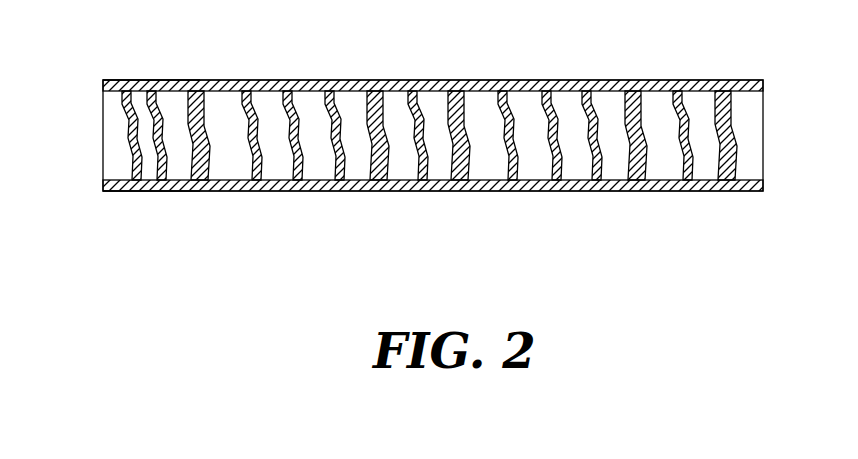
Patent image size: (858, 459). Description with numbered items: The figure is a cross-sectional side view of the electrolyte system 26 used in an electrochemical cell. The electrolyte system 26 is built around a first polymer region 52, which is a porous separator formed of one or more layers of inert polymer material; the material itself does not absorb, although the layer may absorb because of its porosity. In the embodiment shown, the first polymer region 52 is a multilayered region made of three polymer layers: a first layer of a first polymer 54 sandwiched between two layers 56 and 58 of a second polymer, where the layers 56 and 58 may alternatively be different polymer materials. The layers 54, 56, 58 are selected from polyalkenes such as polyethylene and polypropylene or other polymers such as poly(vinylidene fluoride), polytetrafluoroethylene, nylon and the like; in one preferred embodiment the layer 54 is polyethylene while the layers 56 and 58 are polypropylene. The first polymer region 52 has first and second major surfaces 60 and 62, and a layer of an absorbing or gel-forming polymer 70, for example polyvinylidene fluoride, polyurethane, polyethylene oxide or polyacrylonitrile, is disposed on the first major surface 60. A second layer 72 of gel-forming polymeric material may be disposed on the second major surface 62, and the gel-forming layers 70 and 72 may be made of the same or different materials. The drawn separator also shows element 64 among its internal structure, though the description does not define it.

The electrolyte system 26 is at (692, 302).
The first polymer region 52 is at (763, 137).
The first layer of a first polymer 54 is at (753, 80).
The layer of a second polymer 56 is at (760, 186).
The layer of a second polymer 58 is at (195, 178).
The first major surface 60 is at (288, 178).
The second major surface 62 is at (376, 178).
The thin fin 64 is at (508, 178).
The layer of absorbing or gel-forming polymer 70 is at (128, 81).
The second layer of second polymeric material 72 is at (103, 190).